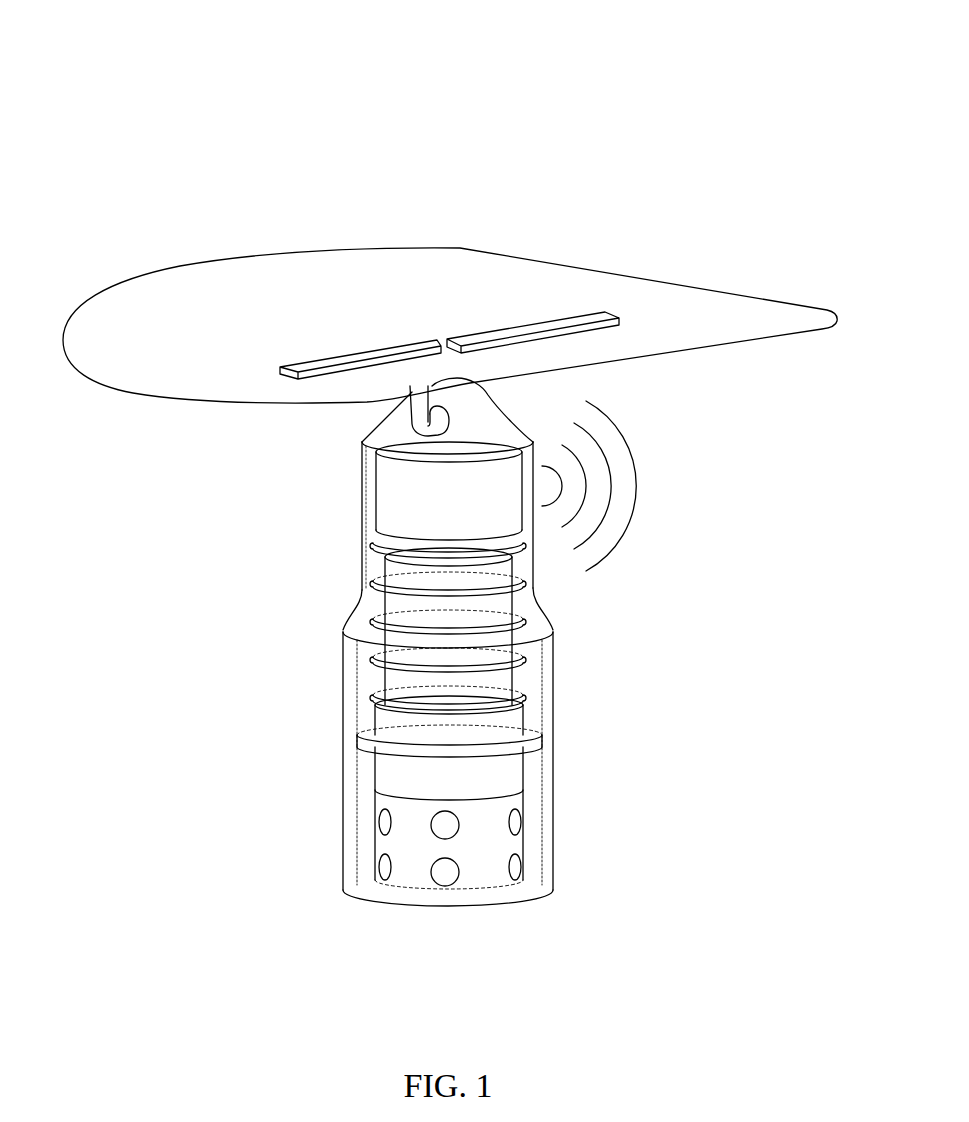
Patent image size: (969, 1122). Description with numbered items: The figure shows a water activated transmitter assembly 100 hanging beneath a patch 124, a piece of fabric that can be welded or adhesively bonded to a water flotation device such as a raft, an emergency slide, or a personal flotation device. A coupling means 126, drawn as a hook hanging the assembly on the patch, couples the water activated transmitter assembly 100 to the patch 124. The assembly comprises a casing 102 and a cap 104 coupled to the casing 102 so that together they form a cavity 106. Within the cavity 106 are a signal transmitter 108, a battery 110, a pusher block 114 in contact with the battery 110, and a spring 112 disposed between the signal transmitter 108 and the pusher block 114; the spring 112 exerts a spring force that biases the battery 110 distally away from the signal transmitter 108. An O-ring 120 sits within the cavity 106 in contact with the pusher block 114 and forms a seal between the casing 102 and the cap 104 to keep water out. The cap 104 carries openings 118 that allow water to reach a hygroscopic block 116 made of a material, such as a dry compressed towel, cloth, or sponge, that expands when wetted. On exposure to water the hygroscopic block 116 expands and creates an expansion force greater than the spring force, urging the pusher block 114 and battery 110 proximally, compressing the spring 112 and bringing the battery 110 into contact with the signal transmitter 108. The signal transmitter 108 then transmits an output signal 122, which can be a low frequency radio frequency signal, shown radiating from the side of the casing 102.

The water activated transmitter assembly 100 is at (517, 130).
The casing 102 is at (508, 433).
The cap 104 is at (482, 902).
The cavity 106 is at (372, 590).
The signal transmitter 108 is at (378, 507).
The battery 110 is at (512, 638).
The spring 112 is at (372, 620).
The pusher block 114 is at (382, 777).
The hygroscopic block 116 is at (525, 797).
The opening 118 is at (520, 862).
The O-ring 120 is at (535, 743).
The output signal 122 is at (636, 487).
The patch 124 is at (698, 305).
The coupling means 126 is at (407, 403).